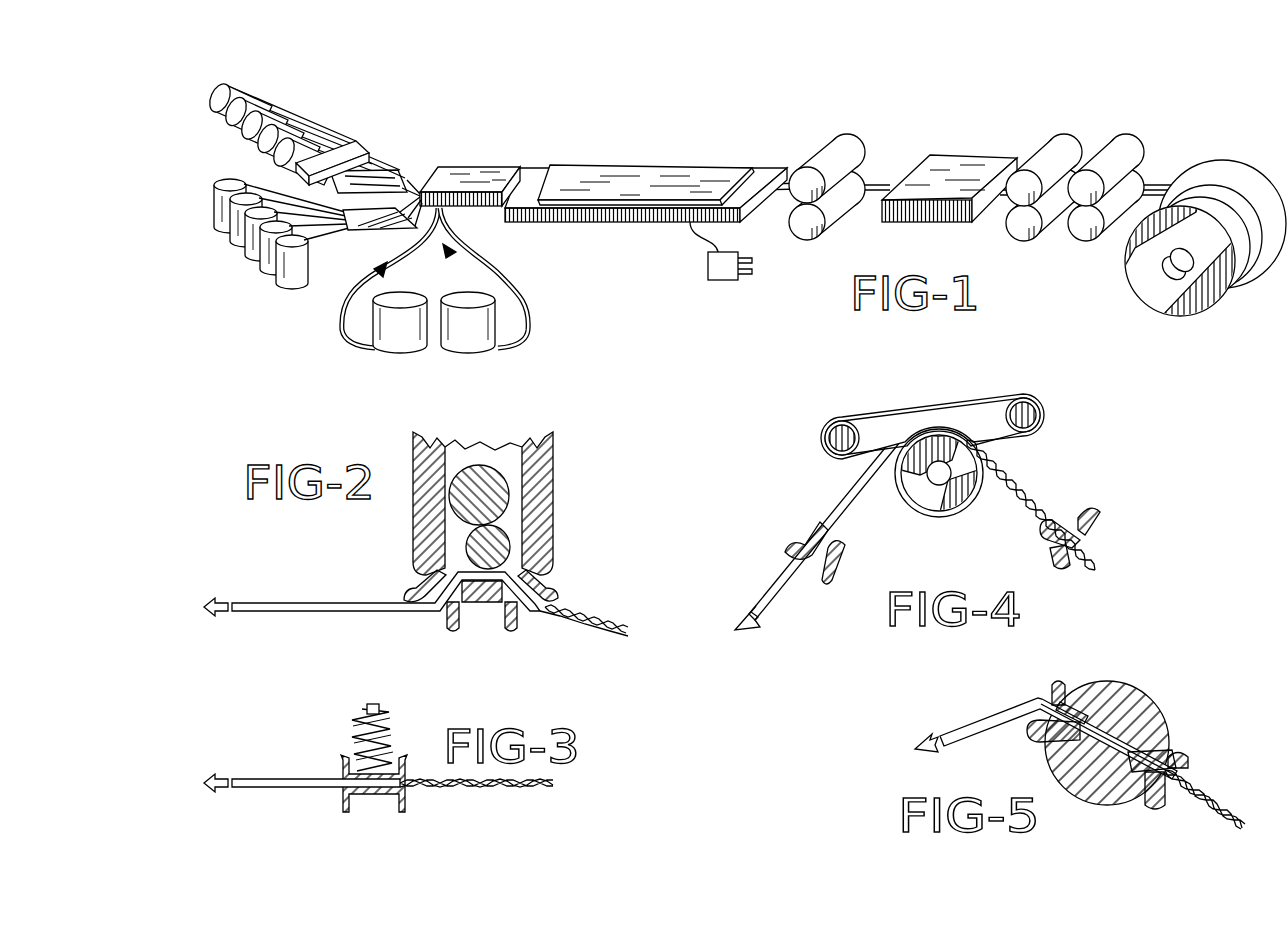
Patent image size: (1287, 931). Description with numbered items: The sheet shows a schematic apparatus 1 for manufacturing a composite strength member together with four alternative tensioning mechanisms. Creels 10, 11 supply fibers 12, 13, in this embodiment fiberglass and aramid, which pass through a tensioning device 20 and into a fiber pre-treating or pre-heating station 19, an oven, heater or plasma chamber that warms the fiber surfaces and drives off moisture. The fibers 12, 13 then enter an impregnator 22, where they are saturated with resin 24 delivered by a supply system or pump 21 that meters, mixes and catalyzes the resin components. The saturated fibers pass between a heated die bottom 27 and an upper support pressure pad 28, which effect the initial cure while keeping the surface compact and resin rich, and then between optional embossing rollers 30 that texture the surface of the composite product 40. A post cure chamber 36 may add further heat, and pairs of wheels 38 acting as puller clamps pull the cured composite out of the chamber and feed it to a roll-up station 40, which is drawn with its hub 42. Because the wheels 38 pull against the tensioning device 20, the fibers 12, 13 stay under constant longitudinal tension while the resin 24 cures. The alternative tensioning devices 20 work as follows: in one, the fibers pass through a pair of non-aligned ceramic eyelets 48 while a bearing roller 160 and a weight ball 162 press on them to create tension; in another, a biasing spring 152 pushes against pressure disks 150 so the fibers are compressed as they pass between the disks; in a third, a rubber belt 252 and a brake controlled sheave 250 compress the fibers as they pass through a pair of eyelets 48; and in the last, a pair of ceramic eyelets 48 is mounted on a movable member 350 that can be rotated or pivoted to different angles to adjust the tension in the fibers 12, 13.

In FIG. 1, the apparatus 1 is at (557, 136).
In FIG. 1, the creel 10 is at (247, 240).
In FIG. 1, the creel 11 is at (218, 102).
In FIG. 1, the fibers 12 is at (268, 187).
In FIG. 2, the fibers 12 is at (372, 578).
In FIG. 3, the fibers 12 is at (302, 751).
In FIG. 4, the fibers 12 is at (792, 530).
In FIG. 5, the fibers 12 is at (1046, 720).
In FIG. 1, the fibers 13 is at (272, 100).
In FIG. 2, the fibers 13 is at (305, 602).
In FIG. 3, the fibers 13 is at (268, 779).
In FIG. 4, the fibers 13 is at (778, 587).
In FIG. 5, the fibers 13 is at (958, 728).
In FIG. 1, the fiber pre-treating/pre-heating station 19 is at (349, 150).
In FIG. 1, the tensioning device 20 is at (264, 269).
In FIG. 2, the tensioning device 20 is at (560, 494).
In FIG. 1, the supply system or pump 21 is at (407, 363).
In FIG. 1, the impregnator 22 is at (475, 176).
In FIG. 1, the resin 24 is at (450, 237).
In FIG. 1, the heated die bottom 27 is at (652, 222).
In FIG. 1, the upper support pressure pad 28 is at (652, 180).
In FIG. 1, the embossing rollers 30 is at (845, 148).
In FIG. 1, the post cure chamber 36 is at (955, 172).
In FIG. 1, the pairs of wheels 38 is at (1067, 152).
In FIG. 1, the composite product / roll-up station 40 is at (1222, 190).
In FIG. 1, the spool hub 42 is at (1160, 288).
In FIG. 2, the ceramic eyelets 48 is at (459, 630).
In FIG. 3, the ceramic eyelets 48 is at (476, 783).
In FIG. 4, the ceramic eyelets 48 is at (808, 540).
In FIG. 5, the ceramic eyelets 48 is at (1060, 683).
In FIG. 3, the pressure disks 150 is at (343, 810).
In FIG. 3, the biasing spring 152 is at (358, 742).
In FIG. 2, the bearing roller 160 is at (492, 546).
In FIG. 2, the weight ball 162 is at (482, 490).
In FIG. 4, the brake controlled sheave 250 is at (930, 490).
In FIG. 4, the rubber belt 252 is at (967, 400).
In FIG. 5, the movable member 350 is at (1130, 700).